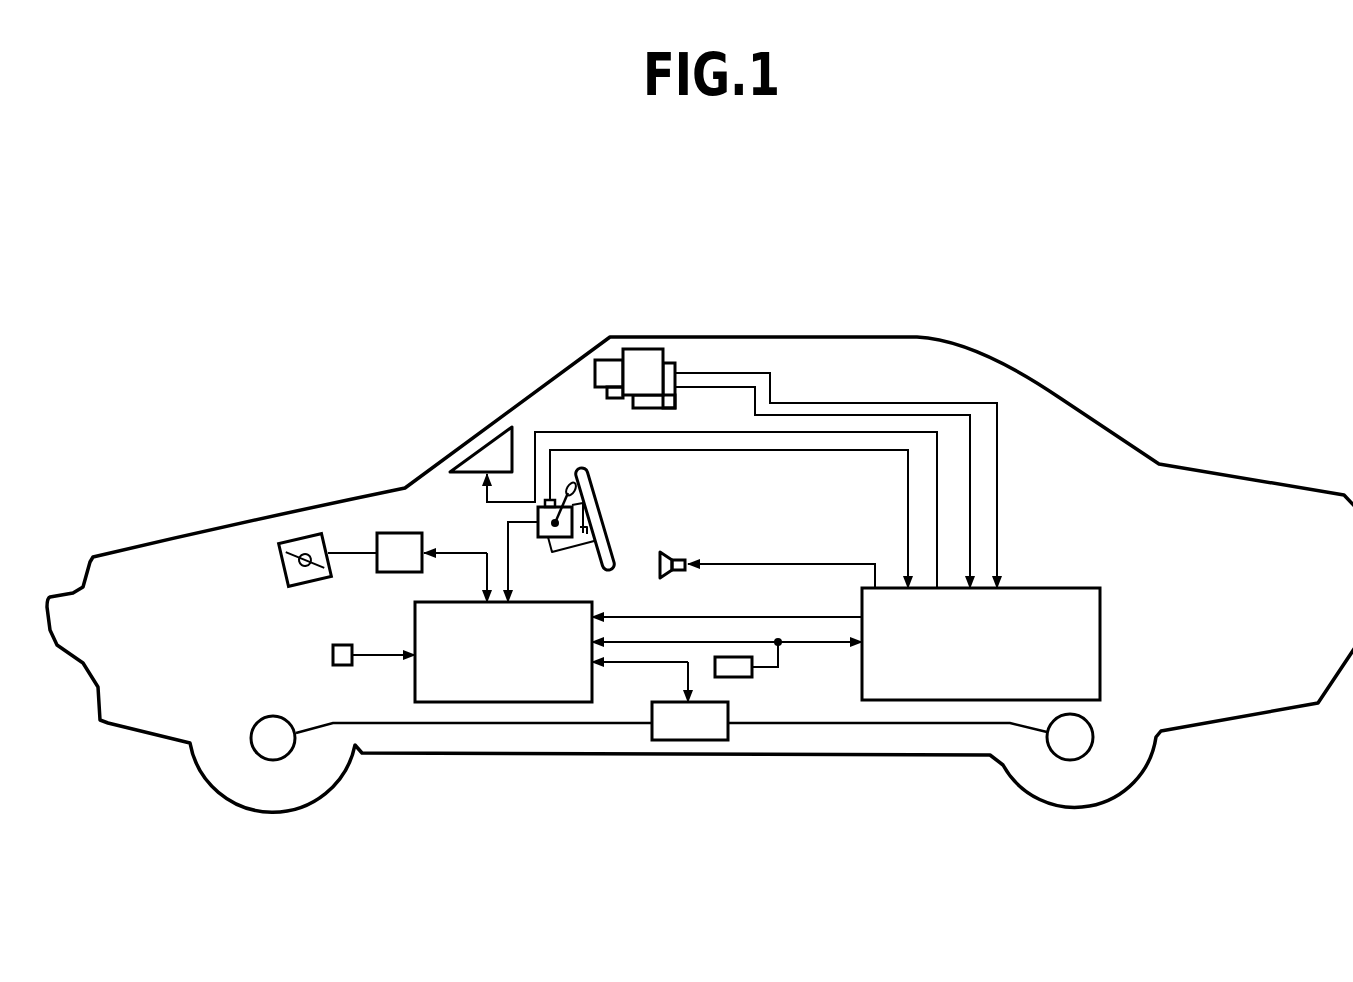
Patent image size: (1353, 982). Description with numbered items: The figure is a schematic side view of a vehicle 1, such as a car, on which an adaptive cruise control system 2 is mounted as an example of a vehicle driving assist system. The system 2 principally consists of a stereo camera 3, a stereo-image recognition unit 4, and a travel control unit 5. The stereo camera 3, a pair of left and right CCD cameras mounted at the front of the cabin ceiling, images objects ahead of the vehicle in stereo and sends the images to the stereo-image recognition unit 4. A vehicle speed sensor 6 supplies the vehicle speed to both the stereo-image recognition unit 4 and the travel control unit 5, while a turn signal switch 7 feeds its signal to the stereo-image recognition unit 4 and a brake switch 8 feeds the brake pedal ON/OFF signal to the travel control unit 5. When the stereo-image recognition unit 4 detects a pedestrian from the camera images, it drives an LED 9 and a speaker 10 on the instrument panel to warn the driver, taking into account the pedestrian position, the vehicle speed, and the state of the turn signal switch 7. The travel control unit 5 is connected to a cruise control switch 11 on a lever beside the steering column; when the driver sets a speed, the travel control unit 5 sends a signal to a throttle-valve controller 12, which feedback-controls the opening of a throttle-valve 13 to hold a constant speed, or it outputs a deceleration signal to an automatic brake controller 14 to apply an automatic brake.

The vehicle 1 is at (1080, 370).
The adaptive cruise control (ACC) system 2 is at (1084, 567).
The stereo camera 3 is at (643, 349).
The stereo-image recognition unit 4 is at (1100, 629).
The travel control unit 5 is at (520, 702).
The vehicle speed sensor 6 is at (752, 675).
The turn signal switch 7 is at (545, 503).
The brake switch 8 is at (333, 653).
The LED 9 is at (485, 452).
The speaker 10 is at (664, 553).
The cruise control switch 11 is at (563, 550).
The throttle-valve controller 12 is at (400, 533).
The throttle-valve 13 is at (302, 540).
The automatic brake controller 14 is at (680, 740).